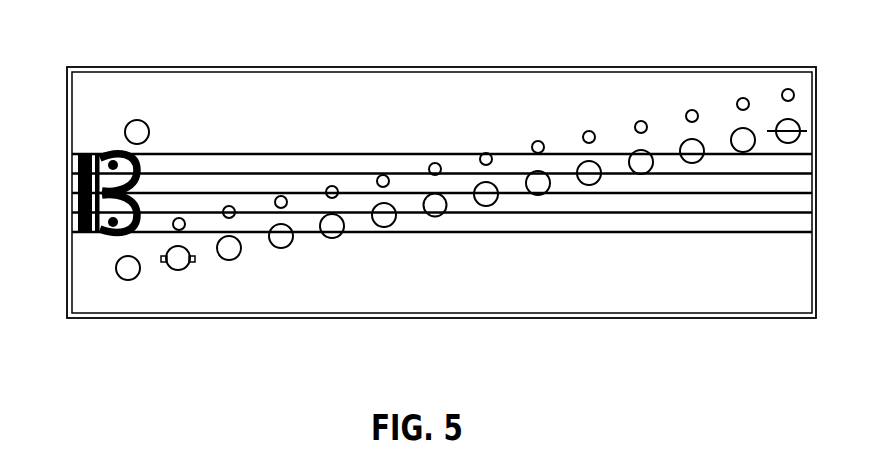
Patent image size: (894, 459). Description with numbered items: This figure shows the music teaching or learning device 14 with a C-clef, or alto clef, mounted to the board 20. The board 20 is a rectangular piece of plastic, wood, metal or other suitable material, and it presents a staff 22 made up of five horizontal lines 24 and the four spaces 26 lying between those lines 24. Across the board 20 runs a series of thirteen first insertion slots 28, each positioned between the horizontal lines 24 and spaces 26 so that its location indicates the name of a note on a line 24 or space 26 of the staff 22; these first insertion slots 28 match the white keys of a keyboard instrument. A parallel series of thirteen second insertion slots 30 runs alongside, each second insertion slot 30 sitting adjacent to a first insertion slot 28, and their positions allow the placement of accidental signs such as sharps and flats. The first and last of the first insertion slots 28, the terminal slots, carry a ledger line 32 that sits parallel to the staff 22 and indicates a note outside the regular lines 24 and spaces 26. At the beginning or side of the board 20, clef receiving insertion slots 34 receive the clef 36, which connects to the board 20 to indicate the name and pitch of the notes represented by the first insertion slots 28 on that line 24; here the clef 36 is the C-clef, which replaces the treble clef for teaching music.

The device 14 is at (654, 32).
The board 20 is at (252, 108).
The staff 22 is at (764, 203).
The horizontal lines 24 is at (598, 235).
The spaces 26 is at (764, 222).
The first insertion slots 28 is at (384, 228).
The second insertion slots 30 is at (333, 186).
The ledger line 32 is at (188, 268).
The clef receiving insertion slots 34 is at (137, 120).
The clef 36 is at (78, 198).